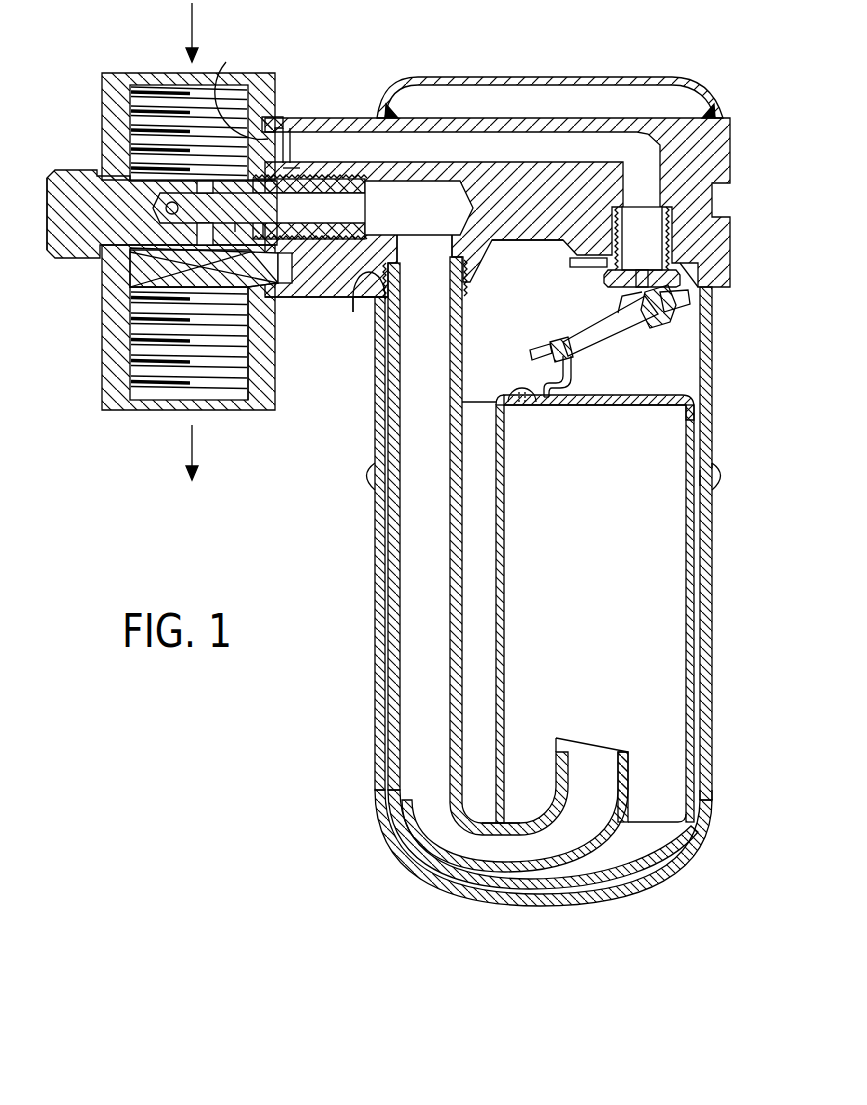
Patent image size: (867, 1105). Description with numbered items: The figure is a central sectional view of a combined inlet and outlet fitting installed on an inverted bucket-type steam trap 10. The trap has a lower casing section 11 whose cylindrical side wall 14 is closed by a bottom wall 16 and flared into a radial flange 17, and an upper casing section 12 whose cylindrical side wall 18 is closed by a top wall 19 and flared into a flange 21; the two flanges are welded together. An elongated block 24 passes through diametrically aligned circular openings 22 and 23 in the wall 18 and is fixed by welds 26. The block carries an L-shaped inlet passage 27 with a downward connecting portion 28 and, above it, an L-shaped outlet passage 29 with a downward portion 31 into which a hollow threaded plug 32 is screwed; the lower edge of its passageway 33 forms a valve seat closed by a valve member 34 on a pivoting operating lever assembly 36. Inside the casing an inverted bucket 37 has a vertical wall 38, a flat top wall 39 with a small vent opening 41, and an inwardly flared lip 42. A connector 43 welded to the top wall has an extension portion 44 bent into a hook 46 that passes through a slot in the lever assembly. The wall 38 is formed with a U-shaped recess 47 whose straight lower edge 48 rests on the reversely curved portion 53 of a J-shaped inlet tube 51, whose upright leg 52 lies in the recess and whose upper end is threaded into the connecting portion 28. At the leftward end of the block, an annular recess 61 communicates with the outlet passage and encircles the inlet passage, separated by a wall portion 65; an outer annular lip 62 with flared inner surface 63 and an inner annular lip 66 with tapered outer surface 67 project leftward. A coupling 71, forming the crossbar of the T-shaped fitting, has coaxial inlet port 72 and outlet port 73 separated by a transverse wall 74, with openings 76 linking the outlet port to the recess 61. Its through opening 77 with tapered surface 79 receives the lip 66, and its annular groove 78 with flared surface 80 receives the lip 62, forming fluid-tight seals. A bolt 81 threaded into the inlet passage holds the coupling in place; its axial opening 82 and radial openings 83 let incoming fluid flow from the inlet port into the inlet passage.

The steam trap 10 is at (722, 568).
The lower casing section 11 is at (714, 704).
The upper casing section 12 is at (722, 352).
The cylindrical side wall 14 is at (375, 542).
The bottom wall 16 is at (468, 893).
The radial flange 17 is at (718, 484).
The cylindrical side wall 18 is at (378, 340).
The top wall 19 is at (533, 78).
The flange 21 is at (717, 470).
The circular opening 22 is at (712, 270).
The circular opening 23 is at (353, 300).
The elongated block 24 is at (582, 118).
The weld 26 is at (382, 112).
The inlet passage 27 is at (414, 190).
The connecting portion 28 is at (455, 250).
The outlet passage 29 is at (466, 148).
The downwardly extending portion 31 is at (572, 258).
The plug 32 is at (608, 288).
The passageway 33 is at (640, 270).
The valve member 34 is at (658, 330).
The operating lever assembly 36 is at (598, 346).
The inverted bucket 37 is at (705, 554).
The vertical wall 38 is at (686, 516).
The top wall 39 is at (609, 406).
The small opening 41 is at (522, 390).
The lip 42 is at (682, 815).
The connector 43 is at (640, 402).
The extension portion 44 is at (573, 364).
The hook 46 is at (553, 346).
The recess 47 is at (504, 594).
The lower edge 48 is at (504, 822).
The inlet tube 51 is at (386, 662).
The upright leg 52 is at (460, 524).
The reversely curved portion 53 is at (522, 884).
The annular recess 61 is at (296, 266).
The outer annular lip 62 is at (266, 116).
The radially inner surface 63 is at (258, 140).
The wall portion 65 is at (291, 168).
The inner annular lip 66 is at (268, 240).
The radially outer surface 67 is at (231, 211).
The coupling 71 is at (96, 112).
The inlet port 72 is at (162, 73).
The outlet port 73 is at (205, 410).
The transverse wall 74 is at (178, 268).
The opening 76 is at (237, 268).
The through opening 77 is at (263, 214).
The annular groove 78 is at (283, 296).
The surface 79 is at (285, 170).
The radially inner surface 80 is at (284, 170).
The bolt 81 is at (46, 215).
The axially extending opening 82 is at (338, 208).
The opening 83 is at (187, 207).